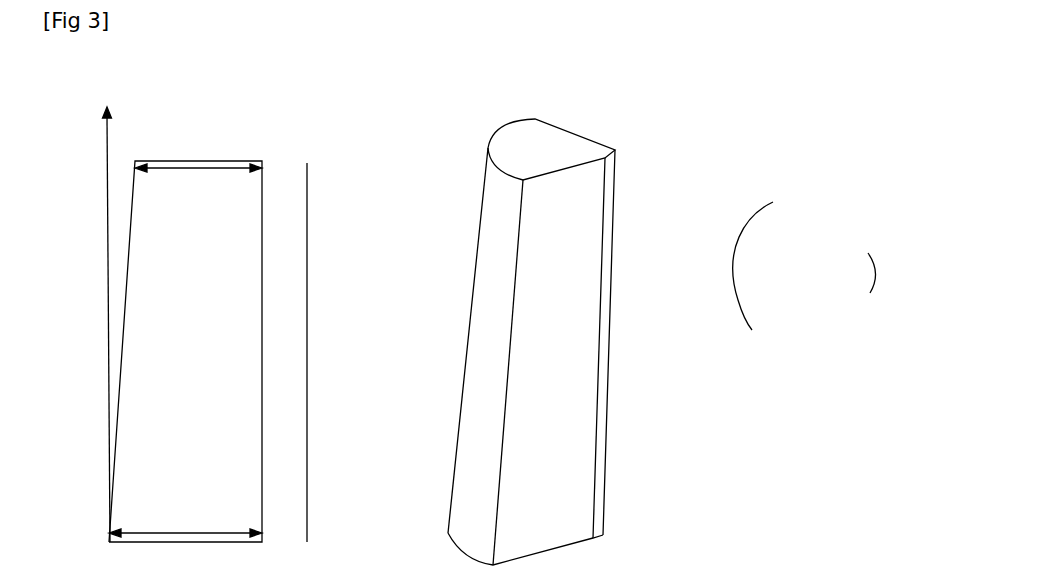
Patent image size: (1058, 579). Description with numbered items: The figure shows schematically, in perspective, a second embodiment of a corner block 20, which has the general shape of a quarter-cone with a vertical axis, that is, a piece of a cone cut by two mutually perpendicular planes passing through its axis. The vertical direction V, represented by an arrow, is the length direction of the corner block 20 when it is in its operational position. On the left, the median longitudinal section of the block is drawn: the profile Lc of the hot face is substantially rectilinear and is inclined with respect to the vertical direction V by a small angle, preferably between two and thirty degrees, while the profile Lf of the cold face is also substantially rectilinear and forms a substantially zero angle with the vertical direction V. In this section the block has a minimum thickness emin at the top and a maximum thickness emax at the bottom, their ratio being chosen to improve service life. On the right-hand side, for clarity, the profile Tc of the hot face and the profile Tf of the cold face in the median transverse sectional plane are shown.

The corner block 20 is at (601, 108).
The vertical direction V is at (107, 309).
The profile of the hot face Lc is at (120, 378).
The profile of the cold face Lf is at (307, 240).
The minimum thickness emin is at (198, 178).
The maximum thickness emax is at (185, 523).
The profile of the hot face in the median transverse sectional plane Tc is at (745, 317).
The profile of the cold face in the median transverse sectional plane Tf is at (877, 273).